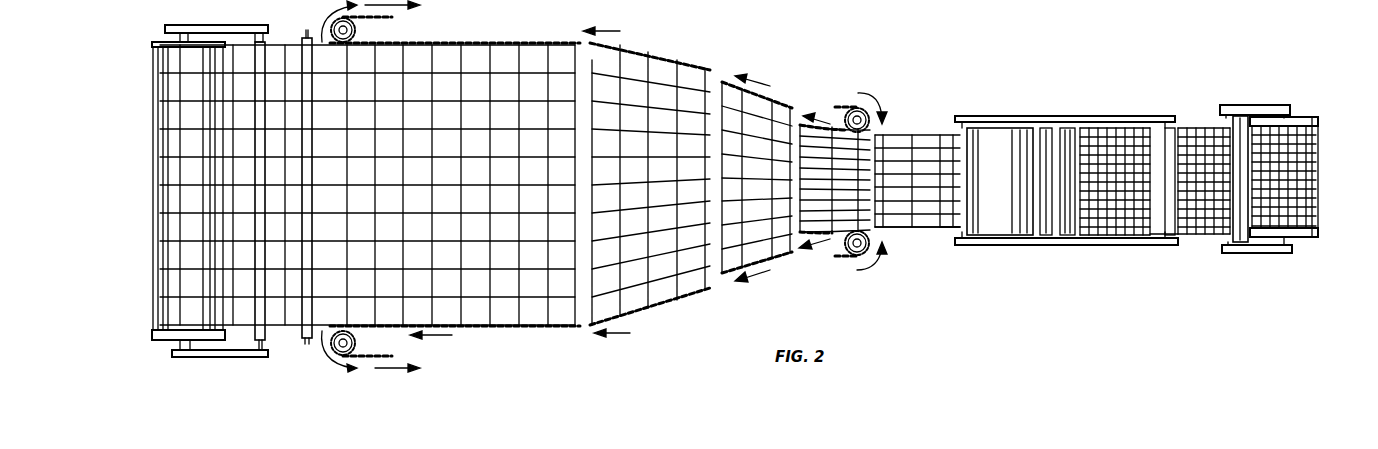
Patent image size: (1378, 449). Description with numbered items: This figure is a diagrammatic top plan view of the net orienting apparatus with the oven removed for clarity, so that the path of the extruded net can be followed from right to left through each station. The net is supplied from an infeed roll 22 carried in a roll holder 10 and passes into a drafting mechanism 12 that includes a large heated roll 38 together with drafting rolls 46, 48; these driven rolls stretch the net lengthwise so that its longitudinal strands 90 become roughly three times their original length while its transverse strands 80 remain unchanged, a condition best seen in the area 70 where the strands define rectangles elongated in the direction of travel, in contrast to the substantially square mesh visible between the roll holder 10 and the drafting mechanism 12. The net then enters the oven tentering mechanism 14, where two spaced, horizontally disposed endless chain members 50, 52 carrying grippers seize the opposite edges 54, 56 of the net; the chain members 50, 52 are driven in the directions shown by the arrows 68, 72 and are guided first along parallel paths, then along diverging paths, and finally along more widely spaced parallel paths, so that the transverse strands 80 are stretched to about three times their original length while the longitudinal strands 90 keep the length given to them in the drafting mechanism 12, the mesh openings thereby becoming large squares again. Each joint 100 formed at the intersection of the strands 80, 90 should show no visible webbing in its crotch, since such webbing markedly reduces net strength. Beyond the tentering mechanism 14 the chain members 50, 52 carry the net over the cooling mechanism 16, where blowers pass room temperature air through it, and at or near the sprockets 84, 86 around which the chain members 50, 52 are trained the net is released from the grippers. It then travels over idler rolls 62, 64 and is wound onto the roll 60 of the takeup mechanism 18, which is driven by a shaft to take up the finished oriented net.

The roll holder 10 is at (1246, 102).
The drafting mechanism 12 is at (1005, 103).
The oven tentering mechanism 14 is at (655, 334).
The cooling mechanism 16 is at (490, 342).
The takeup mechanism 18 is at (191, 22).
The infeed roll 22 is at (1320, 127).
The heated roll 38 is at (1000, 181).
The drafting roll 46 is at (1045, 127).
The drafting roll 48 is at (1067, 127).
The endless chain member 50 is at (540, 46).
The endless chain member 52 is at (703, 298).
The edge 54 is at (893, 135).
The edge 56 is at (905, 229).
The roll 60 is at (168, 172).
The idler roll 62 is at (307, 32).
The idler roll 64 is at (270, 340).
The arrow 68 is at (876, 100).
The area 70 is at (934, 80).
The arrow 72 is at (868, 266).
The transverse strands 80 is at (684, 70).
The sprocket 84 is at (358, 344).
The sprocket 86 is at (351, 34).
The longitudinal strands 90 is at (655, 78).
The joint 100 is at (457, 72).